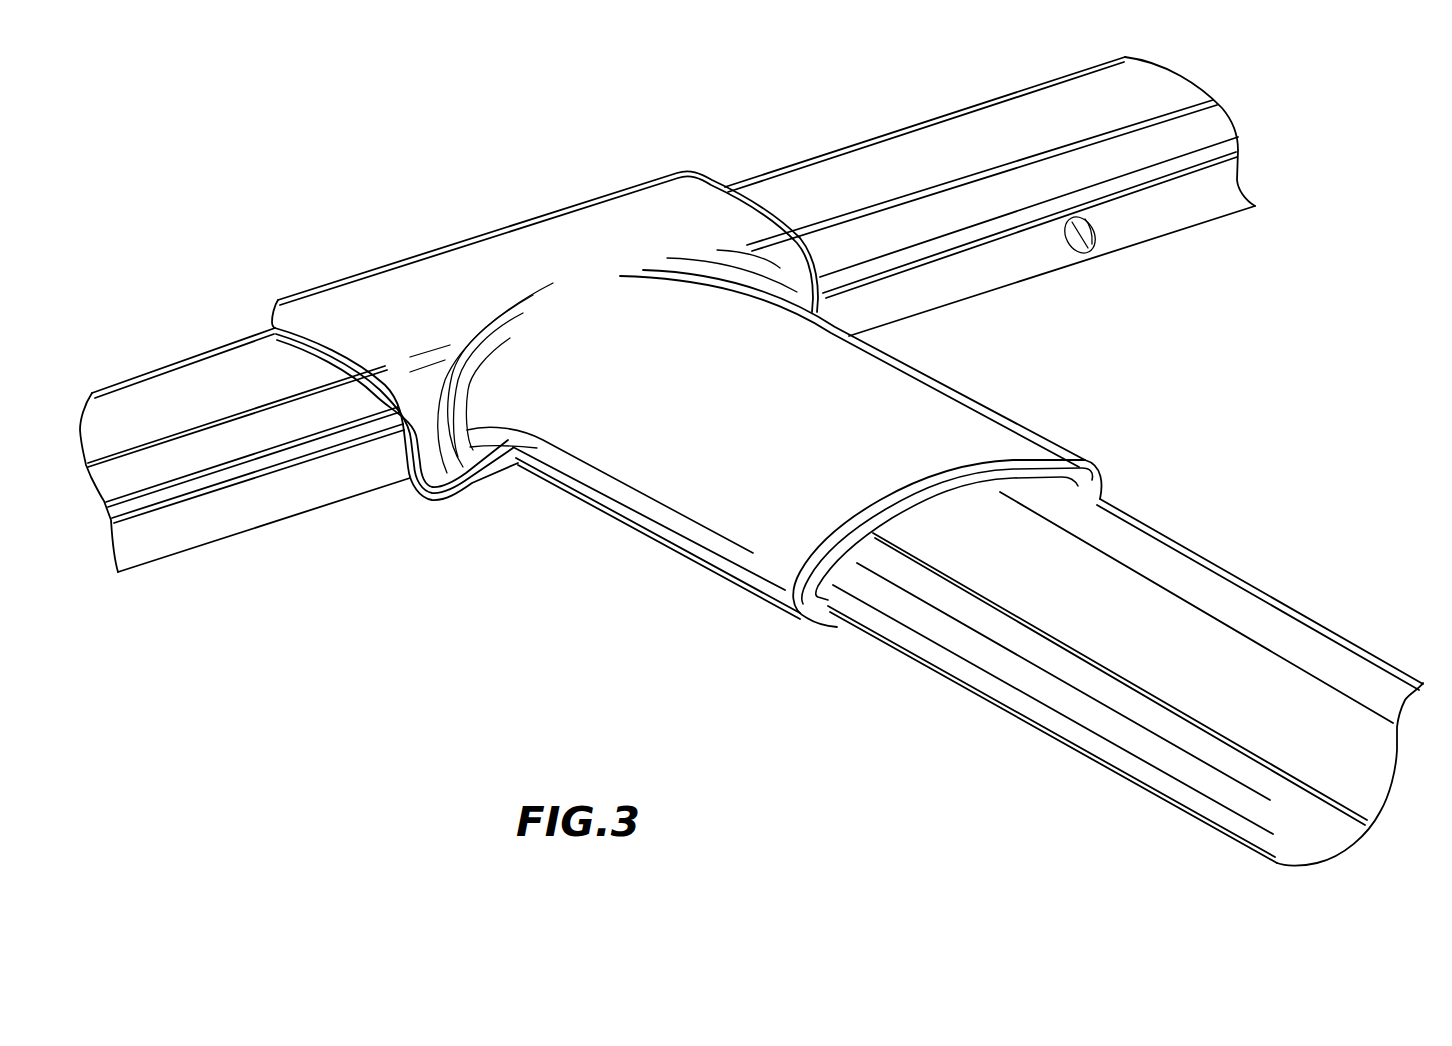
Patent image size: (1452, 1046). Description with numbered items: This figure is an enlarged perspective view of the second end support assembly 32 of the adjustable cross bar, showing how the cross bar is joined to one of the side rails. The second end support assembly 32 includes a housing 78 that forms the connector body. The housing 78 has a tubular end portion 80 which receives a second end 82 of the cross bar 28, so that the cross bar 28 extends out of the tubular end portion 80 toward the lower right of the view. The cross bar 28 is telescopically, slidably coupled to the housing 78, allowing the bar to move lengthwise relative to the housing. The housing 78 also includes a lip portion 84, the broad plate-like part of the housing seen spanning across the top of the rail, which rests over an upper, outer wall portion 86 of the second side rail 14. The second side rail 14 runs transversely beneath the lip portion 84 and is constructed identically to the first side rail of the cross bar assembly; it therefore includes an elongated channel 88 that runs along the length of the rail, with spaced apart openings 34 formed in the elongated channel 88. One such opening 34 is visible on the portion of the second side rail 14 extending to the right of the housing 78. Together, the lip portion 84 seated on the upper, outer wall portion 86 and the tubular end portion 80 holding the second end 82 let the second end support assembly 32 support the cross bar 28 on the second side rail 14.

The second side rail 14 is at (852, 156).
The upper, outer wall portion 86 is at (172, 382).
The elongated channel 88 is at (1100, 168).
The spaced apart openings 34 is at (1094, 251).
The cross bar 28 is at (1247, 608).
The second end support assembly 32 is at (997, 397).
The lip portion 84 is at (452, 257).
The housing 78 is at (735, 598).
The tubular end portion 80 is at (1065, 452).
The second end 82 is at (1057, 517).